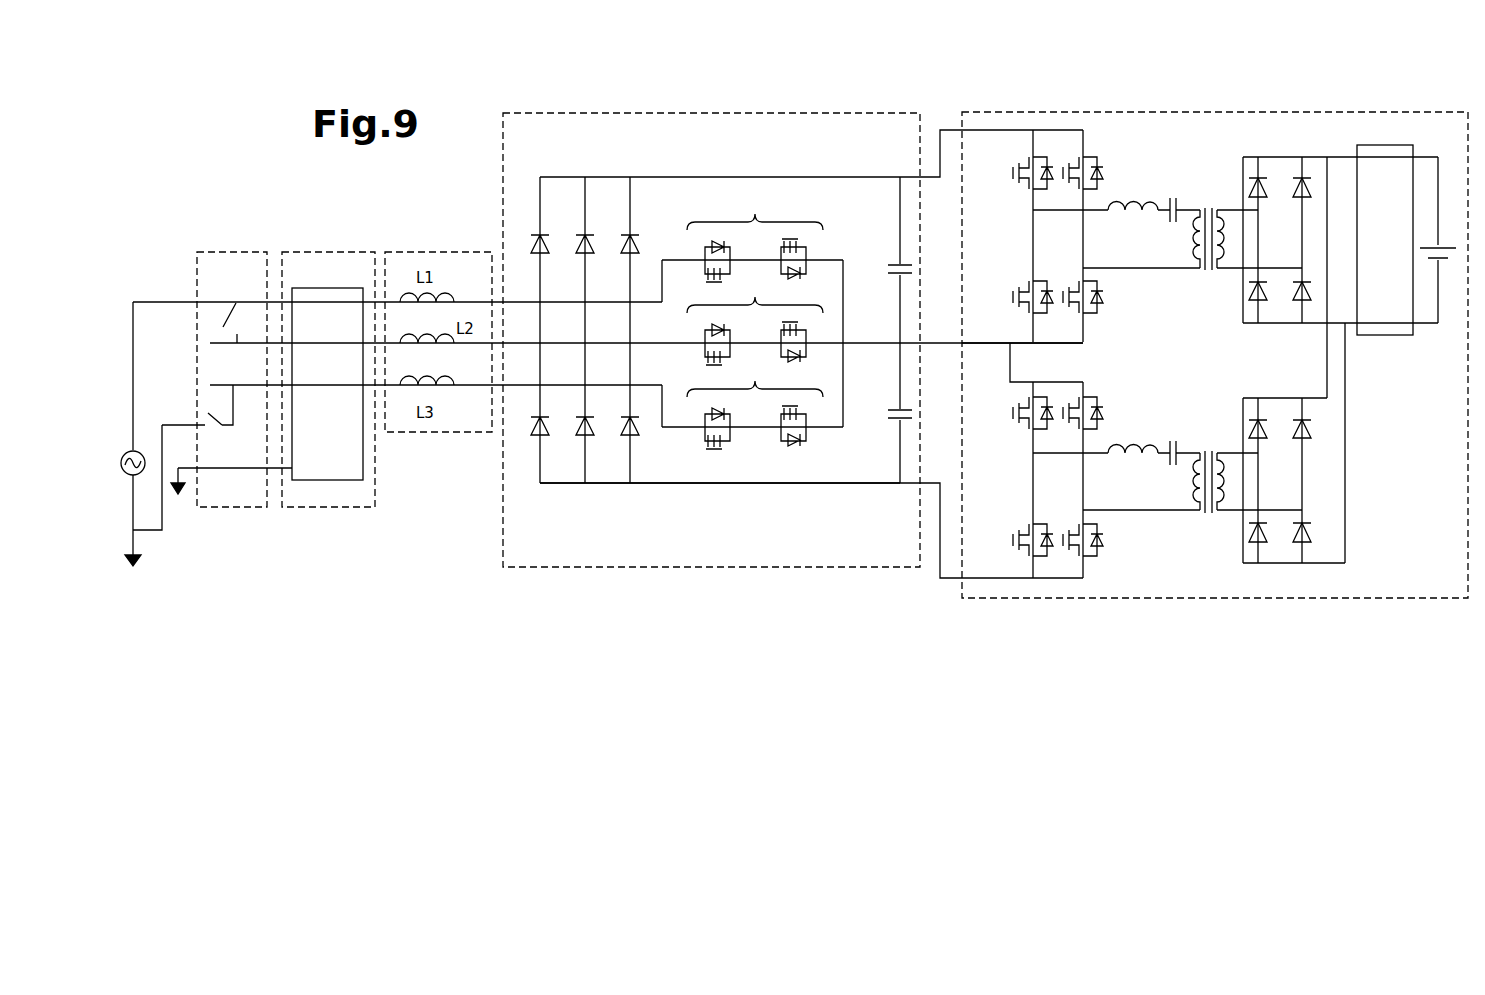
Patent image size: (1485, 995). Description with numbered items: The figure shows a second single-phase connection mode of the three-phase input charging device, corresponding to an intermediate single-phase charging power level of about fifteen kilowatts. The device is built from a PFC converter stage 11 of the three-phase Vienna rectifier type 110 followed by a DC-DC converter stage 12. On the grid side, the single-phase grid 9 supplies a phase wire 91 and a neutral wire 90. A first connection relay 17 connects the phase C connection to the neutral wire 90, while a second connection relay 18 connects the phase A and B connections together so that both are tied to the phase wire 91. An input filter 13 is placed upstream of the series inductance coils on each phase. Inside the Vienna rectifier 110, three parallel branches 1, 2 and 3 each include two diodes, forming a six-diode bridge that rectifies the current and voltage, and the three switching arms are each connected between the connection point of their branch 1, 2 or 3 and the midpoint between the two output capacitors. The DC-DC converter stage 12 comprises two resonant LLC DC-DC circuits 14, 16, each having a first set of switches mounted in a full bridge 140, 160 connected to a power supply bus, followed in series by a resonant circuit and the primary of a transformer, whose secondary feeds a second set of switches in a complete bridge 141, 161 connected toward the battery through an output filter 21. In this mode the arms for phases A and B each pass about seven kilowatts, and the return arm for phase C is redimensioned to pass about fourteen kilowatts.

The single-phase grid 9 is at (127, 452).
The PFC converter stage 11 is at (742, 304).
The DC-DC converter stage 12 is at (1110, 96).
The input filter 13 is at (328, 379).
The DC-DC circuit 14 is at (1167, 201).
The DC-DC circuit 16 is at (1167, 437).
The first connection relay 17 is at (212, 433).
The second connection relay 18 is at (225, 325).
The output filter 21 is at (1406, 240).
The neutral wire 90 is at (125, 510).
The phase wire 91 is at (130, 325).
The three-phase Vienna rectifier 110 is at (500, 520).
The first branch 1 is at (540, 478).
The second branch 2 is at (585, 480).
The third branch 3 is at (630, 480).
The full bridge 140 is at (1000, 150).
The complete bridge 141 is at (1283, 165).
The full bridge 160 is at (1054, 575).
The complete bridge 161 is at (1276, 552).